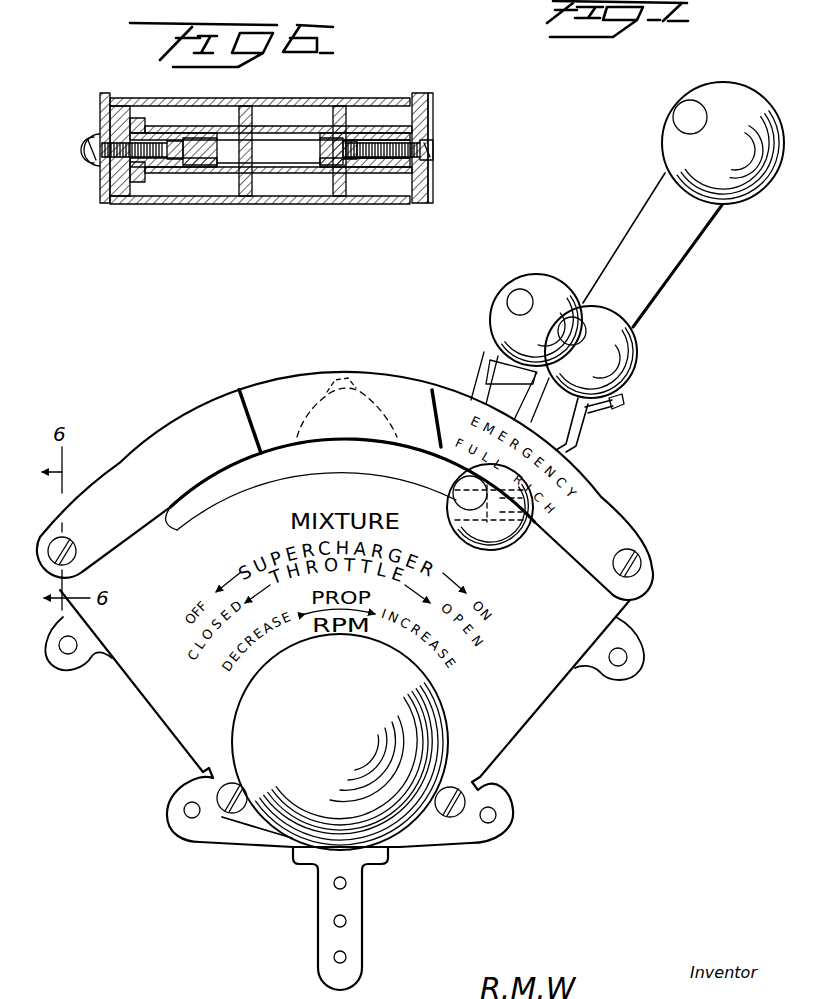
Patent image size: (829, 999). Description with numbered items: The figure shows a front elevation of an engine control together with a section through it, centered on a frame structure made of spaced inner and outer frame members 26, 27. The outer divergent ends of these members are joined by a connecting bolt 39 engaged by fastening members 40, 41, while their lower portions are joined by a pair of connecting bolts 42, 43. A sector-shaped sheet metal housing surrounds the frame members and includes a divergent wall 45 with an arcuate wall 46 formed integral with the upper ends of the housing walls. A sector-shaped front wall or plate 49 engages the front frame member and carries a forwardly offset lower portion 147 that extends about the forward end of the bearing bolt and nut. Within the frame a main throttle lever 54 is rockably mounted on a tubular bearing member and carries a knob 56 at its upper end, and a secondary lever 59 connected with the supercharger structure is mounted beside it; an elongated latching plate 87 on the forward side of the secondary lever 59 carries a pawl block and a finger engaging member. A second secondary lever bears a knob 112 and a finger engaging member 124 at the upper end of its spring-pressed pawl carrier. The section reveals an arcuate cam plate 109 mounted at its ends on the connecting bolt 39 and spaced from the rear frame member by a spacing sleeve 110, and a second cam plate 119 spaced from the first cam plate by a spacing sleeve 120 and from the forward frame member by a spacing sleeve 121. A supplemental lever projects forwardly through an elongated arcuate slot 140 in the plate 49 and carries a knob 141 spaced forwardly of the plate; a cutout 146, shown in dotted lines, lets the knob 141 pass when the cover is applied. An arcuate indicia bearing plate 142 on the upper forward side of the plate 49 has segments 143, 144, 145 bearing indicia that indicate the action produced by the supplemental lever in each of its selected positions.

In FIG. 6, the cam plate 109 is at (373, 100).
In FIG. 6, the arcuate wall 46 is at (313, 100).
In FIG. 6, the outer frame member 27 is at (118, 200).
In FIG. 6, the inner frame member 26 is at (413, 207).
In FIG. 6, the divergent wall 45 is at (362, 210).
In FIG. 6, the spacing sleeve 120 is at (280, 123).
In FIG. 6, the spacing sleeve 121 is at (203, 128).
In FIG. 6, the forwardly offset lower portion 147 is at (138, 182).
In FIG. 1, the forwardly offset lower portion 147 is at (288, 805).
In FIG. 6, the cam plate 119 is at (237, 187).
In FIG. 6, the connecting bolt 39 is at (297, 157).
In FIG. 6, the spacing sleeve 110 is at (397, 190).
In FIG. 6, the fastening member 41 is at (85, 165).
In FIG. 1, the fastening member 41 is at (50, 557).
In FIG. 6, the fastening member 40 is at (433, 148).
In FIG. 1, the front wall or plate 49 is at (533, 683).
In FIG. 1, the indicia bearing plate 142 is at (597, 494).
In FIG. 1, the segment 145 is at (447, 450).
In FIG. 1, the arcuate slot 140 is at (232, 465).
In FIG. 1, the segment 143 is at (215, 410).
In FIG. 1, the segment 144 is at (295, 393).
In FIG. 1, the cutout 146 is at (373, 400).
In FIG. 1, the connecting bolt 43 is at (230, 813).
In FIG. 1, the connecting bolt 42 is at (453, 808).
In FIG. 1, the knob 141 is at (490, 540).
In FIG. 1, the secondary lever 59 is at (503, 360).
In FIG. 1, the latching plate 87 is at (490, 388).
In FIG. 1, the knob 112 is at (620, 365).
In FIG. 1, the finger engaging member 124 is at (613, 417).
In FIG. 1, the main throttle lever 54 is at (673, 257).
In FIG. 1, the knob 56 is at (748, 183).